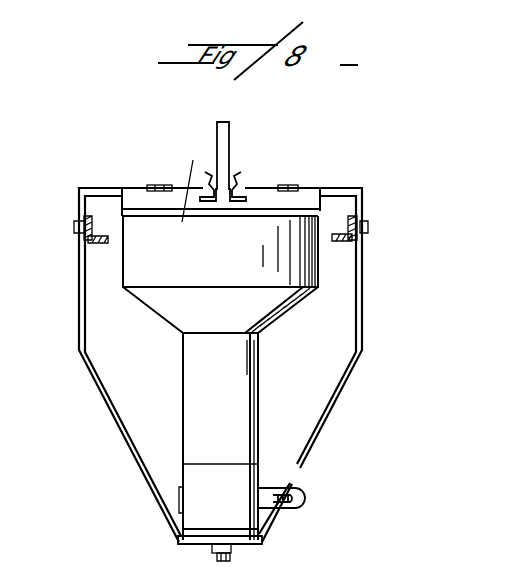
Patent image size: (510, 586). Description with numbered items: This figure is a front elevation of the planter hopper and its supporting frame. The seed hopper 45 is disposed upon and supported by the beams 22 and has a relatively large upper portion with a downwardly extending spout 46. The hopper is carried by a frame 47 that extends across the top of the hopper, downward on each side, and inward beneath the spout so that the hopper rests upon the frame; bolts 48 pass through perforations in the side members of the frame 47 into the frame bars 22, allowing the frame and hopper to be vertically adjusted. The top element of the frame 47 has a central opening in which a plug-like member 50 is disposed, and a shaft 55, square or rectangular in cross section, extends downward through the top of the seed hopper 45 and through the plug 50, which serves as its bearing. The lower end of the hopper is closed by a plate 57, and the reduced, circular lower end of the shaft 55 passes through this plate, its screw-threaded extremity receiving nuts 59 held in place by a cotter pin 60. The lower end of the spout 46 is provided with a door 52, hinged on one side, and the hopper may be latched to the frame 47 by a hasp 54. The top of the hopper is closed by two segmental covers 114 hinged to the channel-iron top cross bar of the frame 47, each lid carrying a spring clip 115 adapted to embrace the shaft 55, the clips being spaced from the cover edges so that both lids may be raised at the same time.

The beam 22 is at (336, 242).
The seed hopper 45 is at (282, 282).
The spout 46 is at (258, 371).
The frame 47 is at (362, 350).
The bolt 48 is at (368, 227).
The plug-like member 50 is at (203, 186).
The door 52 is at (206, 467).
The hasp 54 is at (303, 506).
The shaft 55 is at (220, 134).
The plate 57 is at (200, 542).
The nut 59 is at (231, 548).
The cotter pin 60 is at (212, 560).
The segmental cover 114 is at (302, 198).
The spring clip 115 is at (236, 176).